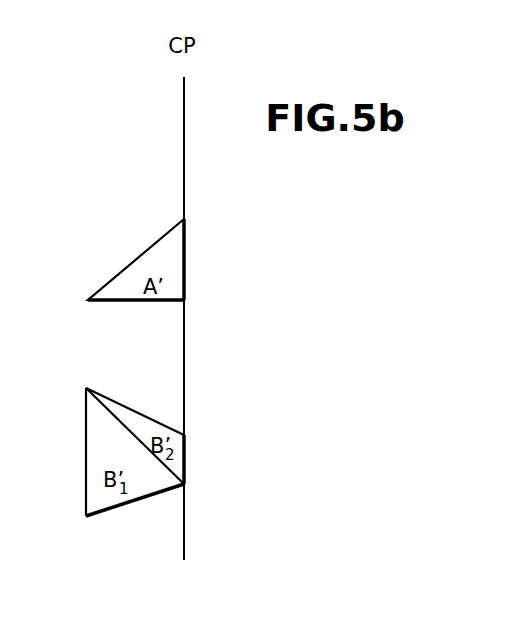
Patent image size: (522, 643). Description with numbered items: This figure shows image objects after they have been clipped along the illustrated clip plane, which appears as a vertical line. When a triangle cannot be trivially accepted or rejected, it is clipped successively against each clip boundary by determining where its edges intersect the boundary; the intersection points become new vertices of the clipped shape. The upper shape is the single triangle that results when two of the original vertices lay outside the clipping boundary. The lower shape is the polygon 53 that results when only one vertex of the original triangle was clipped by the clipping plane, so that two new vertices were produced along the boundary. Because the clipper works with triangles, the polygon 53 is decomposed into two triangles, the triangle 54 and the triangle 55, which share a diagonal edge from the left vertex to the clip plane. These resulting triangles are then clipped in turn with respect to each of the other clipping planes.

The polygon 53 is at (85, 425).
The triangle 54 is at (157, 498).
The triangle 55 is at (120, 400).